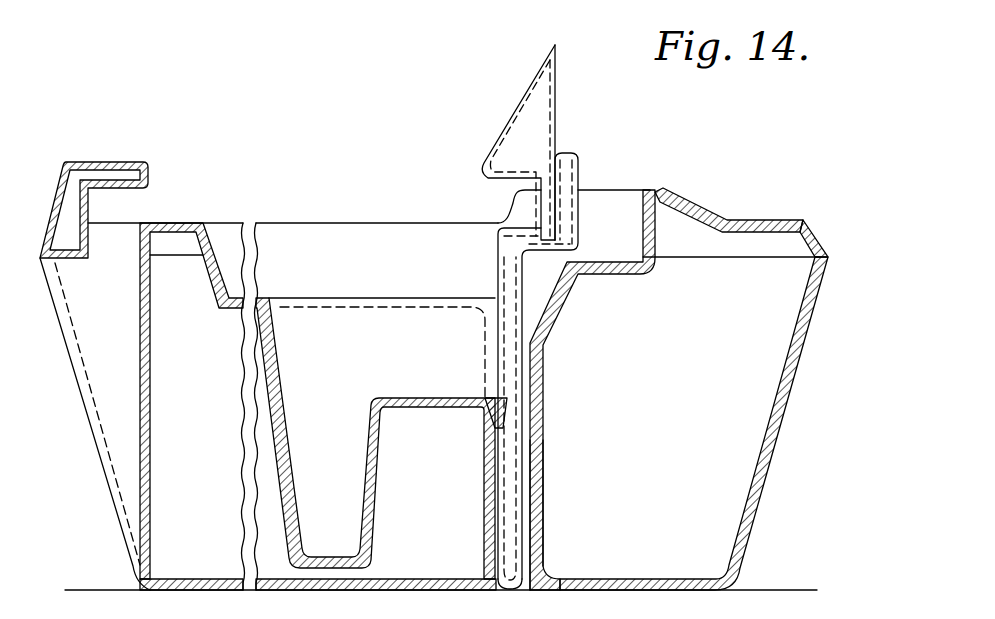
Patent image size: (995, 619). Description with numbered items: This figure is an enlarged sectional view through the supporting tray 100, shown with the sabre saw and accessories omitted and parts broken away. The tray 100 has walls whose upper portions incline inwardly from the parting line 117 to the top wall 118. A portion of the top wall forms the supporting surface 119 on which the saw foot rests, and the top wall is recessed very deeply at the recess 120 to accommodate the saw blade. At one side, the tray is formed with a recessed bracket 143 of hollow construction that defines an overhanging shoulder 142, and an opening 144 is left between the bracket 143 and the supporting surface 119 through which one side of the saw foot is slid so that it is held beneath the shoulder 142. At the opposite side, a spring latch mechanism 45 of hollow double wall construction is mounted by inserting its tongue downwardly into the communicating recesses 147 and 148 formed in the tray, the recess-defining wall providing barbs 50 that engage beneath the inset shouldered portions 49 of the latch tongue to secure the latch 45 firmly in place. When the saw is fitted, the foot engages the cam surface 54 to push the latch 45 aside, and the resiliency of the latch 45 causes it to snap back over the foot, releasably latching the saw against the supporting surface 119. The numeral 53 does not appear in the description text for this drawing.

The tray 100 is at (776, 507).
The parting line 117 is at (866, 230).
The top wall 118 is at (787, 199).
The supporting surface 119 is at (288, 222).
The recess 120 is at (335, 503).
The shoulder 142 is at (128, 196).
The recessed bracket 143 is at (157, 130).
The opening 144 is at (118, 208).
The recess 147 is at (548, 318).
The recess 148 is at (543, 556).
The spring latch mechanism 45 is at (558, 95).
The inset shouldered portions 49 is at (522, 418).
The barbs 50 is at (488, 421).
The latch plate 53 is at (502, 188).
The surface 54 is at (520, 92).